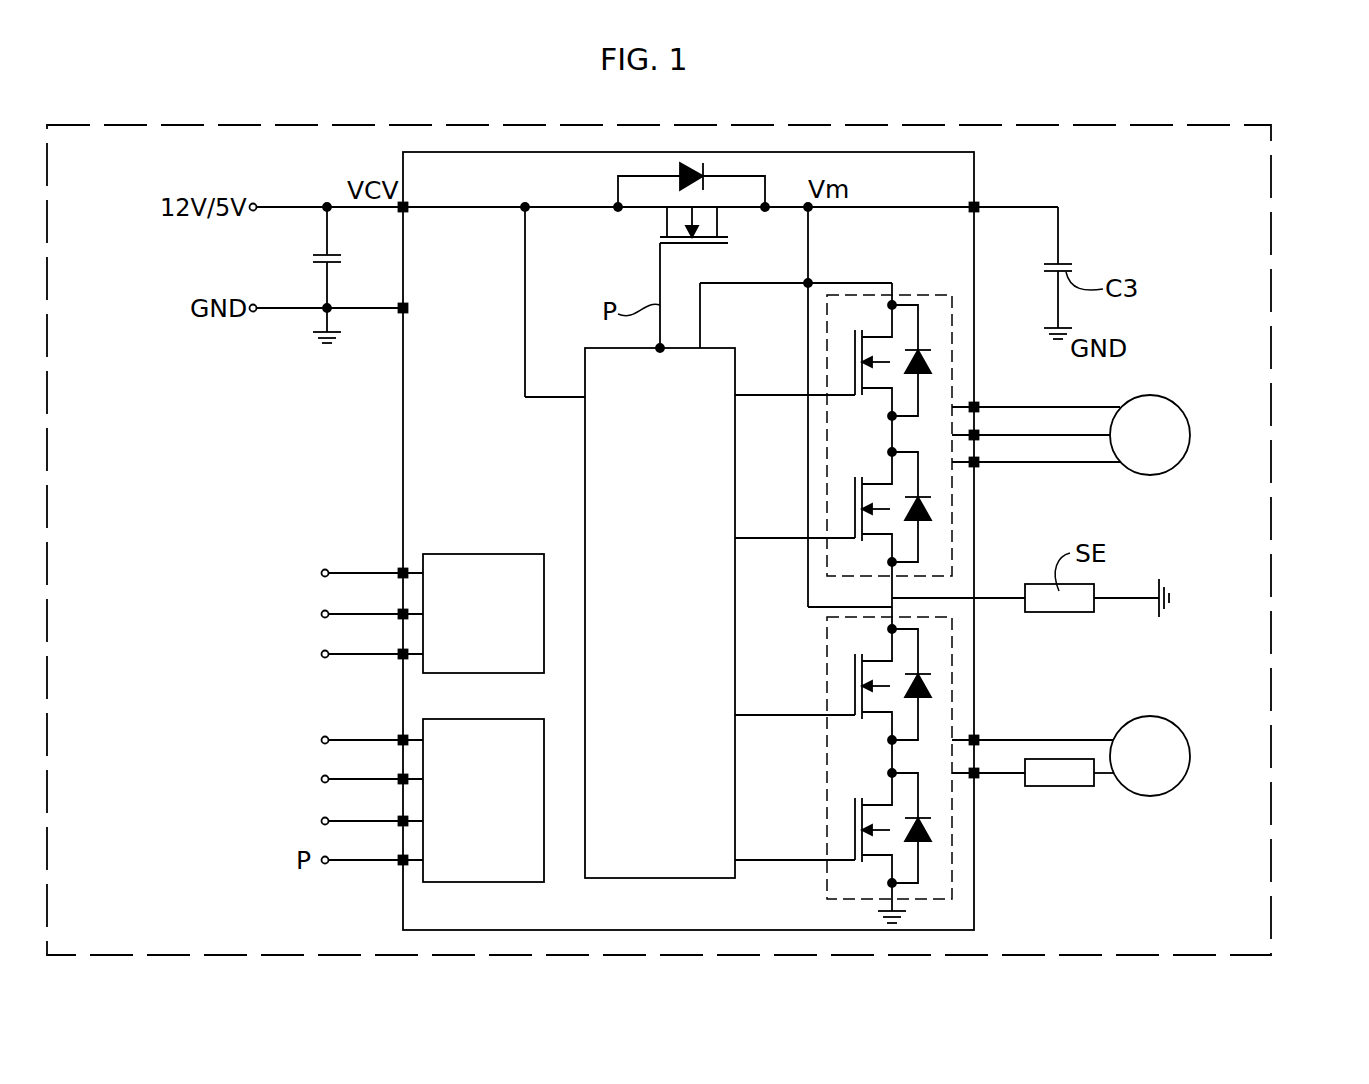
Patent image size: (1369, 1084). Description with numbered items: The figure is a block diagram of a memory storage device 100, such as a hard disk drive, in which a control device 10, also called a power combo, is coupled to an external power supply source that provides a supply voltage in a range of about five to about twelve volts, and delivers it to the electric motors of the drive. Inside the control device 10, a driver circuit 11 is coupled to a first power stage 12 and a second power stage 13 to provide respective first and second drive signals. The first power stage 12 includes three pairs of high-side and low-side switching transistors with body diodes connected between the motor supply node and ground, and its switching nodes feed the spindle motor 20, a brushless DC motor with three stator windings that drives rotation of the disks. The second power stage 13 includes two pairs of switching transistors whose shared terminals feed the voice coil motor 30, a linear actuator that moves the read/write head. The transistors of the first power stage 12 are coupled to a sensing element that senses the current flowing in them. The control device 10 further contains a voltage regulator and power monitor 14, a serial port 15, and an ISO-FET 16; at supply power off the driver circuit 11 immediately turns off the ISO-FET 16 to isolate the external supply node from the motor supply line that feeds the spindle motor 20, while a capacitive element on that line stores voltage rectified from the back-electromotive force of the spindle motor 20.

The hard disk drive 100 is at (1240, 245).
The control device 10 is at (403, 486).
The driver circuit 11 is at (660, 611).
The first power stage 12 is at (821, 449).
The second power stage 13 is at (822, 771).
The voltage regulator and power monitor 14 is at (483, 613).
The serial port 15 is at (483, 800).
The ISO-FET 16 is at (640, 223).
The spindle motor 20 is at (1150, 435).
The voice coil motor 30 is at (1150, 756).